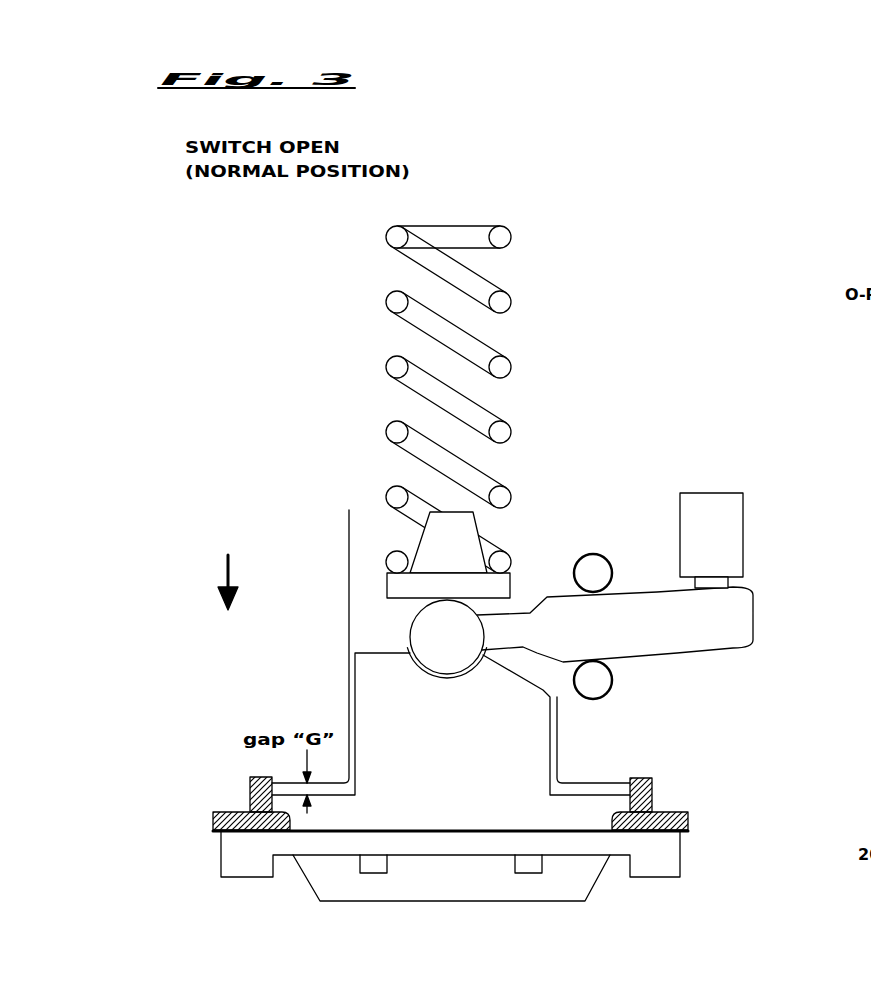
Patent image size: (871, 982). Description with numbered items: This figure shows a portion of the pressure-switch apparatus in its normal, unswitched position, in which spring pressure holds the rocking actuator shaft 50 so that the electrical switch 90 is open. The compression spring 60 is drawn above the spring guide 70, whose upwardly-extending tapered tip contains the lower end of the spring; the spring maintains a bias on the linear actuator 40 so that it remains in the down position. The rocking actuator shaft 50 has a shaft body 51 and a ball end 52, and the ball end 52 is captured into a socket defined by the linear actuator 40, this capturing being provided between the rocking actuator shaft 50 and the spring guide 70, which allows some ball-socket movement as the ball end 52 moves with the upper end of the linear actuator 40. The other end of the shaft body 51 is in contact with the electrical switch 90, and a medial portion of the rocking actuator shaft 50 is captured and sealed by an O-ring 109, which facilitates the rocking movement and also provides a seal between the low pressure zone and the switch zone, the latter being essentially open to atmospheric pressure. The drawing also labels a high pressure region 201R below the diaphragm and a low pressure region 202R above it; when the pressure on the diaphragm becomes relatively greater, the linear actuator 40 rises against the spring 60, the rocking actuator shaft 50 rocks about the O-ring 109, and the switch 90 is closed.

The compression spring 60 is at (512, 303).
The spring guide 70 is at (463, 561).
The rocking actuator shaft 50 is at (639, 575).
The shaft body 51 is at (653, 635).
The ball end 52 is at (460, 643).
The electrical switch 90 is at (732, 508).
The O-ring 109 is at (633, 520).
The linear actuator 40 is at (492, 743).
The high pressure region 201R is at (587, 870).
The low pressure region 202R is at (602, 790).